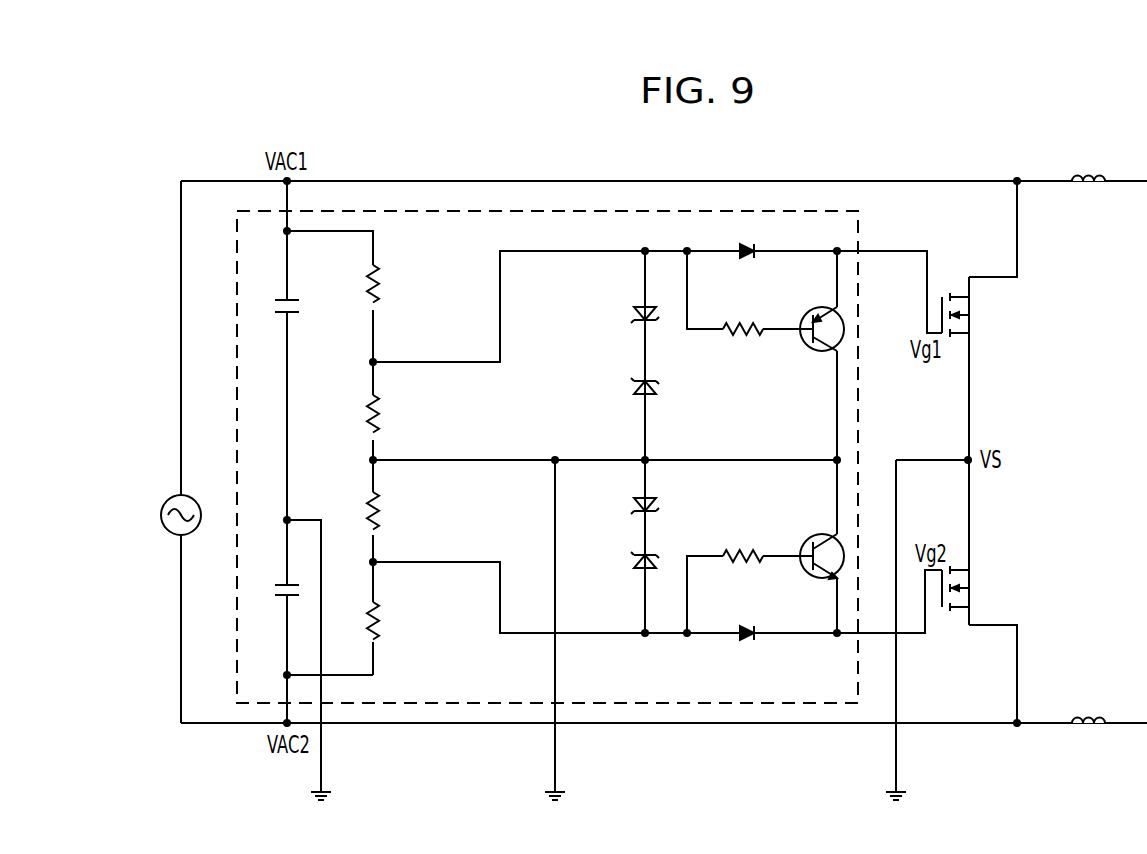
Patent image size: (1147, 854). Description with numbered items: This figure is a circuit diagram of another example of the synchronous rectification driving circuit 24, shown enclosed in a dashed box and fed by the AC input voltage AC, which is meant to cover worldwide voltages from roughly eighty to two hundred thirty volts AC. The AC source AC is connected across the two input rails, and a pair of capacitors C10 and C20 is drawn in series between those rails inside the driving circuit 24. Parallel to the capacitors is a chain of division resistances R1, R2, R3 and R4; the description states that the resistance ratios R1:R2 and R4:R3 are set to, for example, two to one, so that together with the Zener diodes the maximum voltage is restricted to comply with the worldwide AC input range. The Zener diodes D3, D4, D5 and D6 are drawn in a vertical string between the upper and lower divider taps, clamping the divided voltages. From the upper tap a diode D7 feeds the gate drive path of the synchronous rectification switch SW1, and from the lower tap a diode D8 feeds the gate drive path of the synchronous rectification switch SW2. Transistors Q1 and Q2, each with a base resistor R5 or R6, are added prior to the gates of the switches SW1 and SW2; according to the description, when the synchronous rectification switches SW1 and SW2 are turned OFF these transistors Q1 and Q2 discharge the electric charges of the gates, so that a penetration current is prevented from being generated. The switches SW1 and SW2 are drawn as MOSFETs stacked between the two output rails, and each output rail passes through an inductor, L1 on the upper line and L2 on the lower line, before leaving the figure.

The synchronous rectification driving circuit 24 is at (793, 210).
The AC input voltage AC is at (167, 515).
The capacitor C10 is at (275, 291).
The capacitor C20 is at (275, 575).
The division resistance R1 is at (426, 288).
The division resistance R2 is at (428, 422).
The division resistance R3 is at (428, 514).
The division resistance R4 is at (426, 634).
The resistor R5 is at (743, 344).
The resistor R6 is at (743, 542).
The Zener diode D3 is at (628, 317).
The Zener diode D4 is at (628, 389).
The Zener diode D5 is at (628, 504).
The Zener diode D6 is at (628, 564).
The diode D7 is at (749, 237).
The diode D8 is at (746, 649).
The transistor Q1 is at (818, 318).
The transistor Q2 is at (818, 542).
The synchronous rectification switch SW1 is at (980, 312).
The synchronous rectification switch SW2 is at (980, 590).
The inductor L1 is at (1088, 163).
The inductor L2 is at (1088, 702).